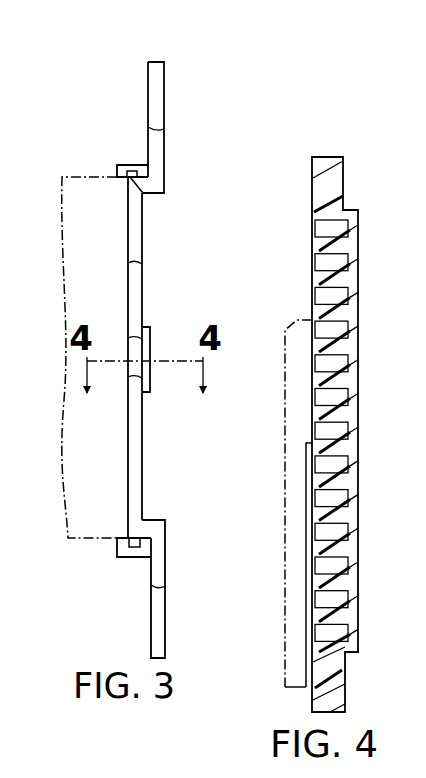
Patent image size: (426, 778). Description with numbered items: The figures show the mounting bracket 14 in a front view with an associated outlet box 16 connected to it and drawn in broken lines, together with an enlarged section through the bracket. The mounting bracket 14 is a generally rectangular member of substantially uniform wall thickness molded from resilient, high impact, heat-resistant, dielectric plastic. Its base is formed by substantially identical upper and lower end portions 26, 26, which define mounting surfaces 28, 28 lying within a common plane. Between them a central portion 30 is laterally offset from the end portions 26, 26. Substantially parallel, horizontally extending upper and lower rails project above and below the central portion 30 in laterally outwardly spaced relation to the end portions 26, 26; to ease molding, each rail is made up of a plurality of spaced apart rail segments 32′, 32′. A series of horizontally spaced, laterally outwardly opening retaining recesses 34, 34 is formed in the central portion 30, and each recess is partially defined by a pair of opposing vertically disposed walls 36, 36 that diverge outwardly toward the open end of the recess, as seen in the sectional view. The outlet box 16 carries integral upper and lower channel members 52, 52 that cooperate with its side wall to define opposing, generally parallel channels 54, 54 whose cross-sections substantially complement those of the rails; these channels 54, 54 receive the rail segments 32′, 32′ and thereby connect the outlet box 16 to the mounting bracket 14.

In FIG. 3, the mounting bracket 14 is at (206, 126).
In FIG. 3, the outlet box 16 is at (72, 177).
In FIG. 3, the upper and lower end portions 26 is at (147, 95).
In FIG. 3, the mounting surfaces 28 is at (165, 102).
In FIG. 3, the central portion 30 is at (137, 238).
In FIG. 3, the rail segments 32' is at (102, 355).
In FIG. 3, the retaining recesses 34 is at (123, 350).
In FIG. 4, the retaining recesses 34 is at (320, 230).
In FIG. 4, the opposing vertically disposed walls 36 is at (318, 373).
In FIG. 3, the channel members 52 is at (146, 556).
In FIG. 3, the channels 54 is at (148, 195).